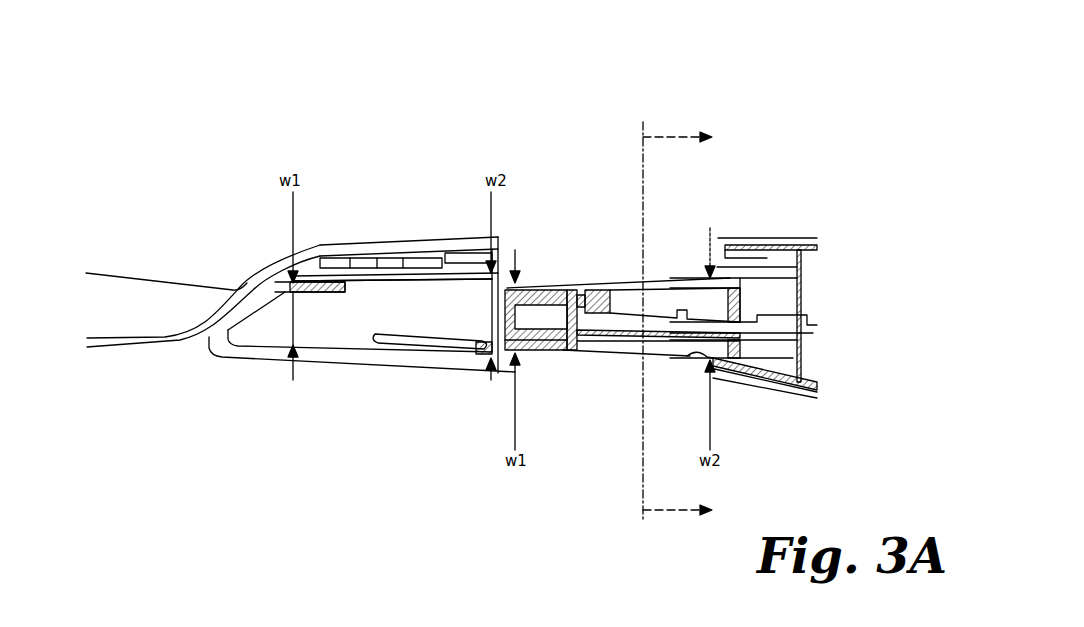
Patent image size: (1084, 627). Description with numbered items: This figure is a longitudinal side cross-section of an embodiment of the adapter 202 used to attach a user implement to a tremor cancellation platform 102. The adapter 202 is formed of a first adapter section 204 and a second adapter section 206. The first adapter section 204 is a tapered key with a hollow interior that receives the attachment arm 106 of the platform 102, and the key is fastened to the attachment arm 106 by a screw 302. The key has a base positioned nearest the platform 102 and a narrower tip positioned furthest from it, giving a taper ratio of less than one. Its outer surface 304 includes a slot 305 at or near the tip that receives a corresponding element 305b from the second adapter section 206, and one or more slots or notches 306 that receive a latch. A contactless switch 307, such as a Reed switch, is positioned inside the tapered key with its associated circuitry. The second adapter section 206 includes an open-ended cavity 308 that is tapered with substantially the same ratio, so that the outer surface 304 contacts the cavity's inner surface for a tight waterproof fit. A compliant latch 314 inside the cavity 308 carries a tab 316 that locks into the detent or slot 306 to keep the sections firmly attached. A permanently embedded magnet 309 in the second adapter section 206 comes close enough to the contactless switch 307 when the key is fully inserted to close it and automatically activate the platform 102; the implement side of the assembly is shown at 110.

The adapter 202 is at (595, 80).
The cable 110 is at (150, 315).
The second adapter section 206 is at (350, 364).
The open-ended cavity 308 is at (425, 313).
The corresponding element 305b is at (318, 283).
The embedded magnet 309 is at (466, 256).
The compliant latch 314 is at (442, 357).
The tab 316 is at (487, 358).
The slot 305 is at (540, 290).
The screw 302 is at (572, 352).
The contactless switch 307 is at (683, 308).
The outer surface 304 is at (603, 357).
The slots or notches 306 is at (703, 362).
The first adapter section 204 is at (691, 278).
The tremor cancellation platform 102 is at (800, 233).
The attachment arm 106 is at (817, 325).